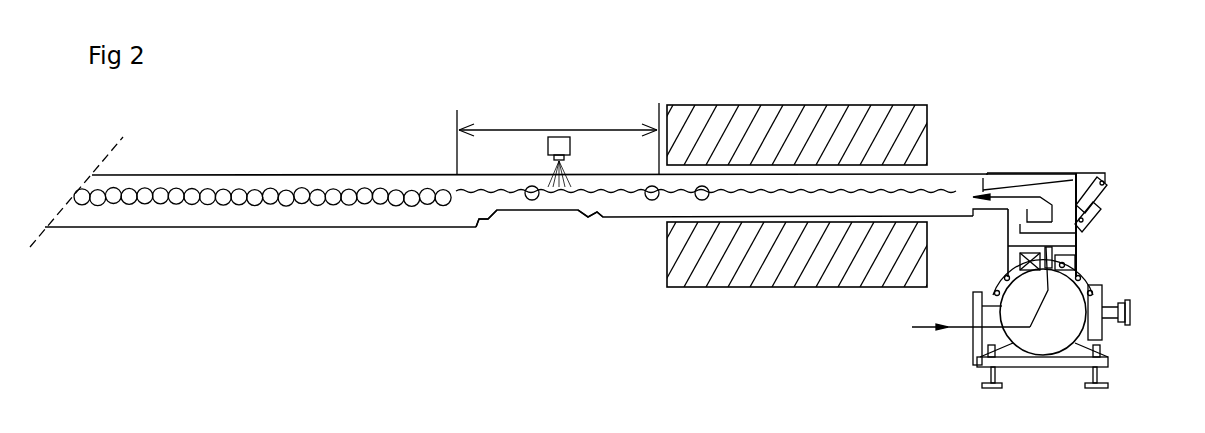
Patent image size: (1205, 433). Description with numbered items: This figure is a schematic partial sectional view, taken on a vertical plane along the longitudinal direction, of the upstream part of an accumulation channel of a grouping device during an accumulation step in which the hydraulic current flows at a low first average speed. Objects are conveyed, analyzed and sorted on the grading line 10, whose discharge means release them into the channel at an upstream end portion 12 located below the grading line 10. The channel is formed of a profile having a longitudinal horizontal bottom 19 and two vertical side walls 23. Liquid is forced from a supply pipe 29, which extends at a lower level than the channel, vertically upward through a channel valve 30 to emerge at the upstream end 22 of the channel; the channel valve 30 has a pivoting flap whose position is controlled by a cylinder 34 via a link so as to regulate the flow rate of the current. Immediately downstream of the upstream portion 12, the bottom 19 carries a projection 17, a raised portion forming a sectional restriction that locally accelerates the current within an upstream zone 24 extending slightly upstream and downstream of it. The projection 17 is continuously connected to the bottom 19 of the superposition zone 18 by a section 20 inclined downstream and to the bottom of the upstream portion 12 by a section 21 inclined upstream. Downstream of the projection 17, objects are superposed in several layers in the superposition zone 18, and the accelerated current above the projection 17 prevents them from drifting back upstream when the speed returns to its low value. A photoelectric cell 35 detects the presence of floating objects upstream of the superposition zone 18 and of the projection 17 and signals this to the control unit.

The grading line 10 is at (843, 96).
The upstream end portion 12 is at (686, 188).
The projection 17 is at (503, 208).
The superposition zone 18 is at (240, 154).
The bottom 19 is at (282, 222).
The section inclined downstream 20 is at (477, 228).
The section inclined upstream 21 is at (590, 218).
The upstream end 22 is at (952, 198).
The vertical side walls 23 is at (143, 185).
The upstream zone 24 is at (486, 128).
The supply pipe 29 is at (1070, 323).
The channel valve 30 is at (1056, 269).
The cylinder 34 is at (1098, 198).
The photoelectric cell 35 is at (557, 137).